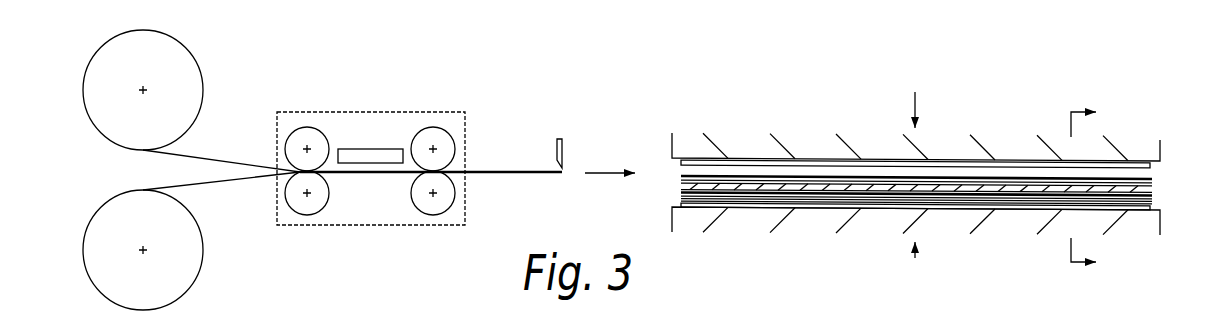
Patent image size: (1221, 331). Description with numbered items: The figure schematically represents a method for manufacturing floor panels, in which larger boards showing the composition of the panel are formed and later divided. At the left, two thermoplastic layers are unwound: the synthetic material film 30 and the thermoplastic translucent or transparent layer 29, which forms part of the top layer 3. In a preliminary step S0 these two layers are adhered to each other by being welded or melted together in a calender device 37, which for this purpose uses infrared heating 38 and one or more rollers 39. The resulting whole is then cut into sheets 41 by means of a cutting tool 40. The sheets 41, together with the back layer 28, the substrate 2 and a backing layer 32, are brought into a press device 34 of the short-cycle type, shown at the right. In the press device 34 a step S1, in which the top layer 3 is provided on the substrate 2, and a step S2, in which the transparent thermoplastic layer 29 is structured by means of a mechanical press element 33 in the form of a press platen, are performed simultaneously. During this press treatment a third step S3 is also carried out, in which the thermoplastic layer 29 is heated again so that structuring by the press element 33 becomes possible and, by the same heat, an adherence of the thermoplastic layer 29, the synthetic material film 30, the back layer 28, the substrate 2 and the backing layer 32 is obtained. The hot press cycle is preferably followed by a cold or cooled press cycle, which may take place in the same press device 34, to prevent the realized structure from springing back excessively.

The thermoplastic translucent or transparent layer 29 is at (217, 157).
The synthetic material film 30 is at (240, 180).
The calender device 37 is at (402, 112).
The infrared heating 38 is at (360, 155).
The rollers 39 is at (300, 133).
The cutting tool 40 is at (558, 157).
The sheets 41 is at (680, 176).
The back layer 28 is at (698, 178).
The substrate 2 is at (682, 187).
The top layer 3 is at (1166, 187).
The backing layer 32 is at (693, 208).
The press element 33 is at (933, 158).
The press device 34 is at (903, 177).
The step S0 is at (341, 115).
The step S1 is at (813, 118).
The step S2 is at (800, 113).
The step S3 is at (830, 121).